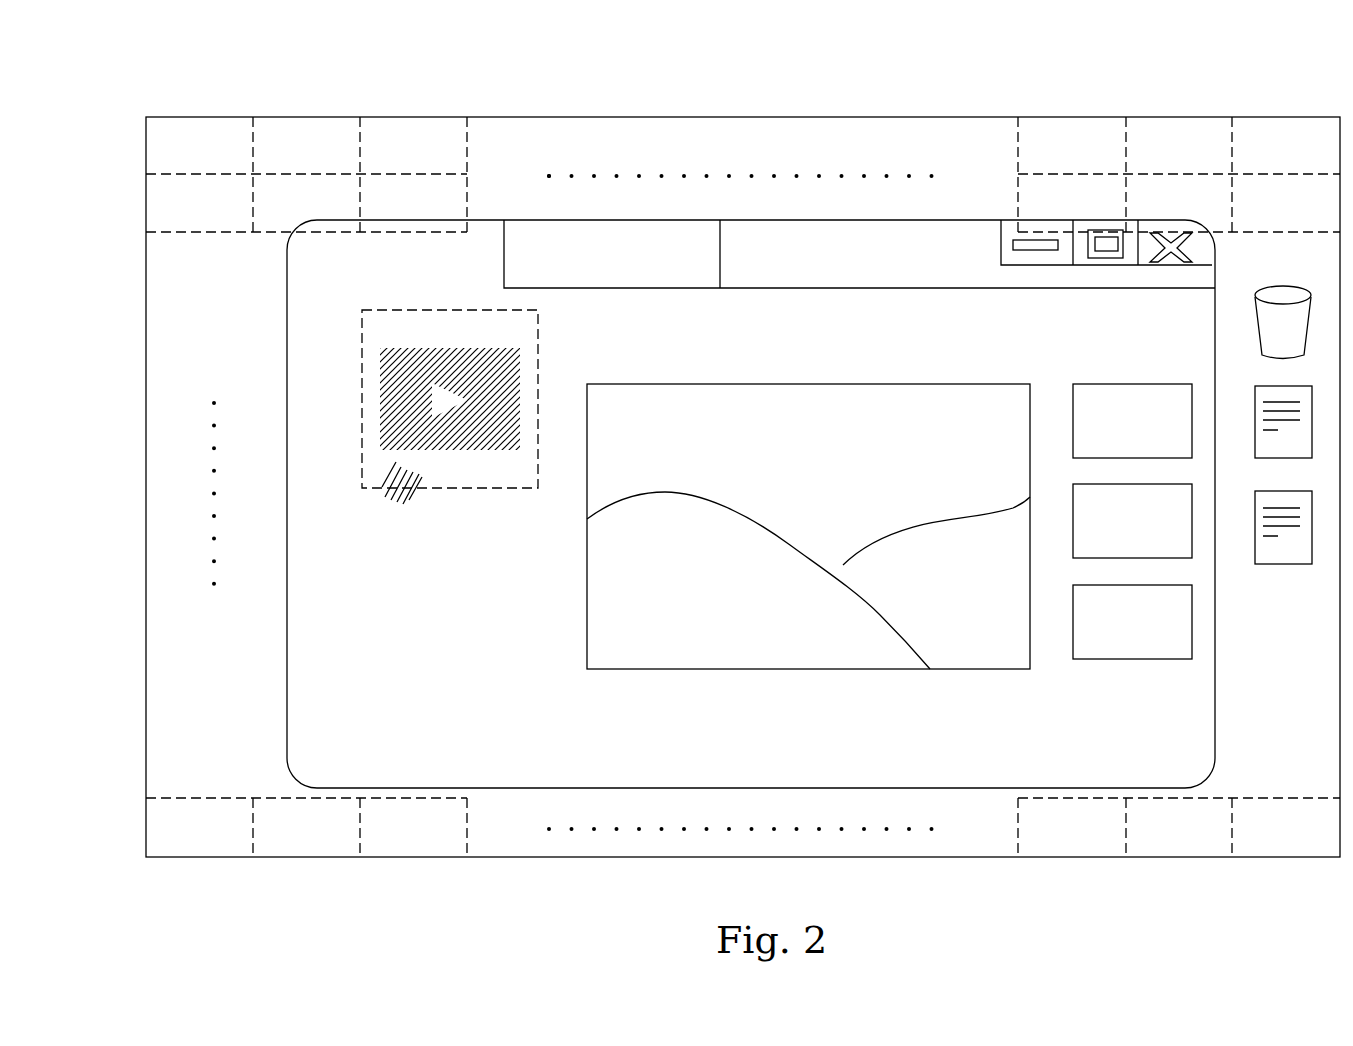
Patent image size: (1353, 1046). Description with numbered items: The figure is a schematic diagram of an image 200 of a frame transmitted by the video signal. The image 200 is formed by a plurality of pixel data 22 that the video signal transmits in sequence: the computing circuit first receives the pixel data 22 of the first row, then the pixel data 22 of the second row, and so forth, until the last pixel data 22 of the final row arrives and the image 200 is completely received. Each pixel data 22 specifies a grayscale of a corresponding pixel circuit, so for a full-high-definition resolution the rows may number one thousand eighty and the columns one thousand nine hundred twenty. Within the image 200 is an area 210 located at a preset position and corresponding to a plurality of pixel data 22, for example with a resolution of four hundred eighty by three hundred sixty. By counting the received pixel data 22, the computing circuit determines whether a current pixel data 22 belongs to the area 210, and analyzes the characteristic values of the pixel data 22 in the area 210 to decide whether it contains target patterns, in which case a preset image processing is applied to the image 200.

The image 200 is at (157, 92).
The pixel data 22 is at (743, 487).
The area 210 is at (538, 333).